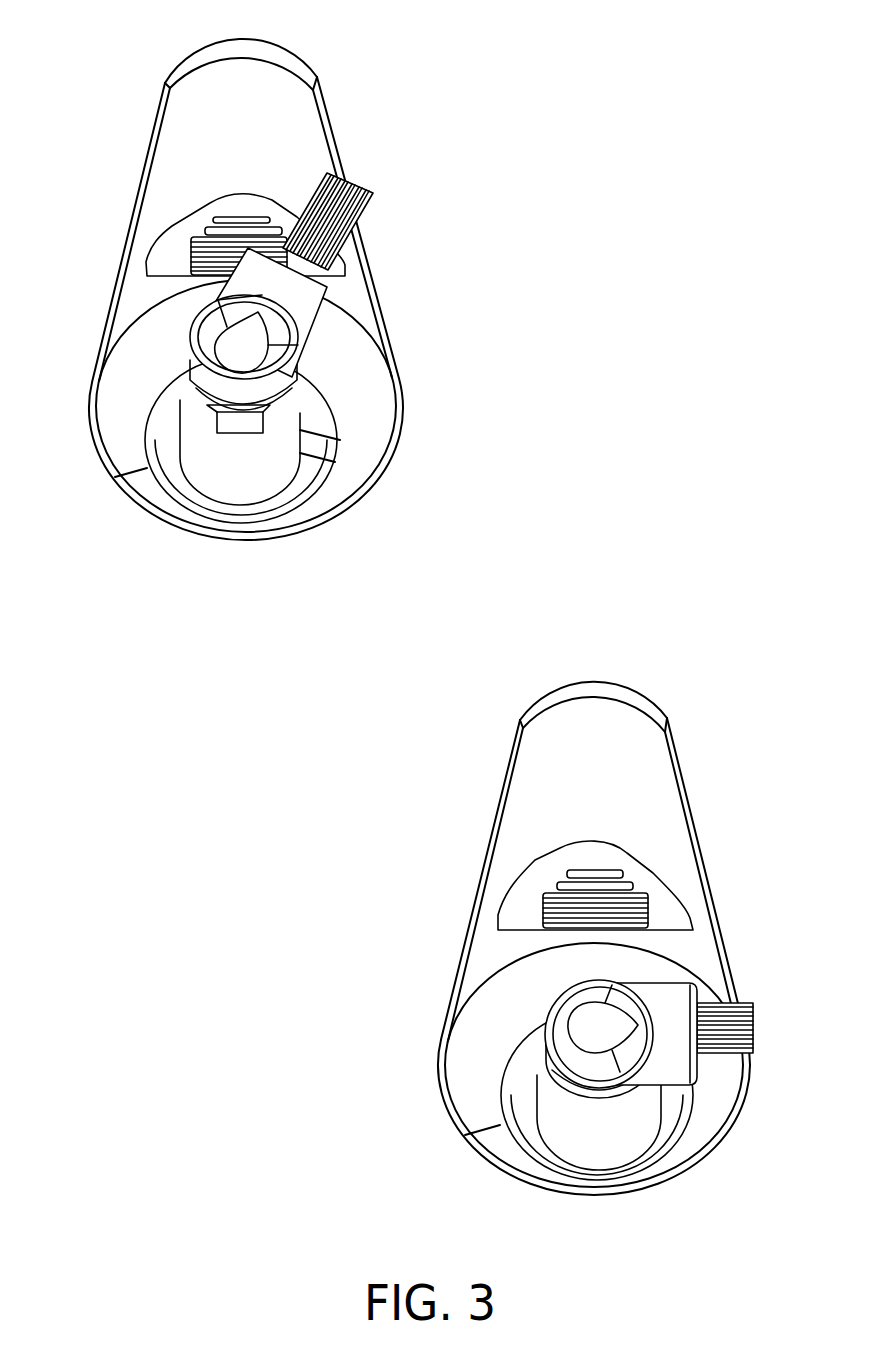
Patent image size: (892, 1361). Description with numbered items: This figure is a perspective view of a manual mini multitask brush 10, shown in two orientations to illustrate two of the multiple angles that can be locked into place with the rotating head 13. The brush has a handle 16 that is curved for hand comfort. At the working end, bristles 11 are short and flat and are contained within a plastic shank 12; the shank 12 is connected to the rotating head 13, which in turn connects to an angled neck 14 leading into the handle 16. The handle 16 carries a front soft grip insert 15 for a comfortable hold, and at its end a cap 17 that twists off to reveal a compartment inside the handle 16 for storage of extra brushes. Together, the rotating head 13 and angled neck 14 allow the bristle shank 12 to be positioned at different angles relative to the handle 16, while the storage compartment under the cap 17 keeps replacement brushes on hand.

The manual mini multitask brush 10 is at (268, 838).
The bristles 11 is at (357, 180).
The plastic shank 12 is at (335, 282).
The rotating head 13 is at (237, 423).
The angled neck 14 is at (300, 483).
The front soft grip insert 15 is at (172, 255).
The handle 16 is at (177, 143).
The cap 17 is at (287, 62).